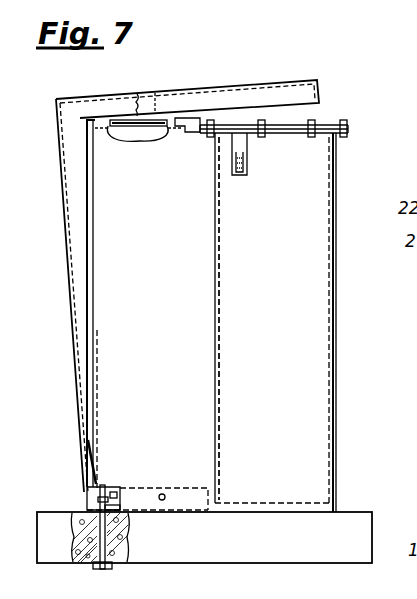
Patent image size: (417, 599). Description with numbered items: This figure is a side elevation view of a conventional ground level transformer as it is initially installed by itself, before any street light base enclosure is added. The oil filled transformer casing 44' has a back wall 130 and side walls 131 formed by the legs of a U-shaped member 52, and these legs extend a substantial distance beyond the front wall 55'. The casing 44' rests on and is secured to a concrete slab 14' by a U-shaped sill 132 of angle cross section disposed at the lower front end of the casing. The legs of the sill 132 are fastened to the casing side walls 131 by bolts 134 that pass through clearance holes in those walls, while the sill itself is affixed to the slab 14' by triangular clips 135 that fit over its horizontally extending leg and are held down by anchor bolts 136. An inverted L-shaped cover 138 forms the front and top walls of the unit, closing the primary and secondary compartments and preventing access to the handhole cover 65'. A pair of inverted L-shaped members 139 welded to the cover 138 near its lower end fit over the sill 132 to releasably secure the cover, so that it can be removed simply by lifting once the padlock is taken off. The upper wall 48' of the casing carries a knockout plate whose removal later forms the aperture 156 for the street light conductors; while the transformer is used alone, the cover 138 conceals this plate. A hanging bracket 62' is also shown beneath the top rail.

The concrete slab 14' is at (206, 516).
The anchor bolts 136 is at (102, 542).
The transformer casing 44' is at (233, 316).
The U-shaped member 52 is at (336, 419).
The back wall 130 is at (337, 318).
The front wall 55' is at (248, 318).
The side walls 131 is at (176, 392).
The inverted L-shaped cover 138 is at (78, 97).
The upper wall 48' is at (132, 154).
The aperture 156 is at (160, 143).
The handhole cover 65' is at (274, 107).
The hanging bracket 62' is at (263, 166).
The inverted L-shaped members 139 is at (92, 462).
The U-shaped sill 132 is at (86, 500).
The bolts 134 is at (116, 491).
The triangular clips 135 is at (118, 503).